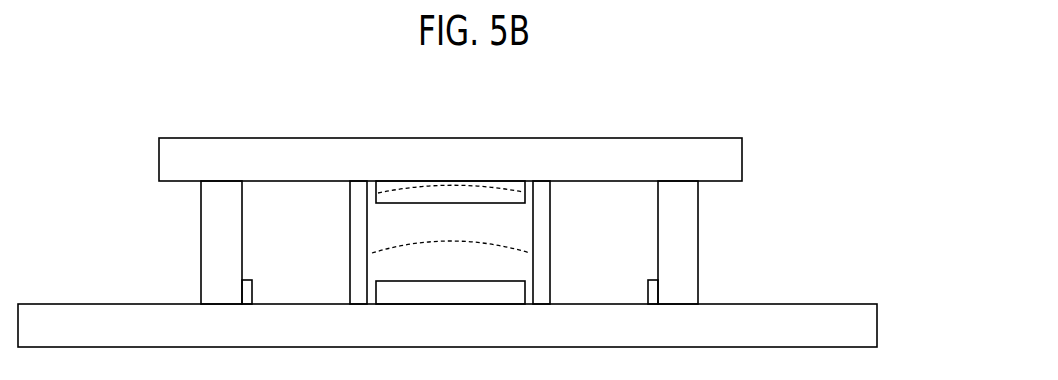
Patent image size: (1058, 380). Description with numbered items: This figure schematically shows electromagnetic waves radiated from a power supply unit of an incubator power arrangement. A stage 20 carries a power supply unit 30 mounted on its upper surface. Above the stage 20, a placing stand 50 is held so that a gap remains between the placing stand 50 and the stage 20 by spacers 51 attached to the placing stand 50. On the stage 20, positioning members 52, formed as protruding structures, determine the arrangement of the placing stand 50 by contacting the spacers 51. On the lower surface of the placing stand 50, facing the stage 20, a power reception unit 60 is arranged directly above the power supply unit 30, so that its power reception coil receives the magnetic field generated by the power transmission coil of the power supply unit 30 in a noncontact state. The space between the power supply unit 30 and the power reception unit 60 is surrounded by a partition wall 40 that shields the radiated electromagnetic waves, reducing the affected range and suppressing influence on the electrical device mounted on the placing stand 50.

The stage 20 is at (877, 323).
The power supply unit 30 is at (486, 281).
The partition wall 40 is at (350, 230).
The placing stand 50 is at (710, 138).
The spacer 51 is at (201, 238).
The positioning member 52 is at (252, 280).
The power reception unit 60 is at (421, 203).